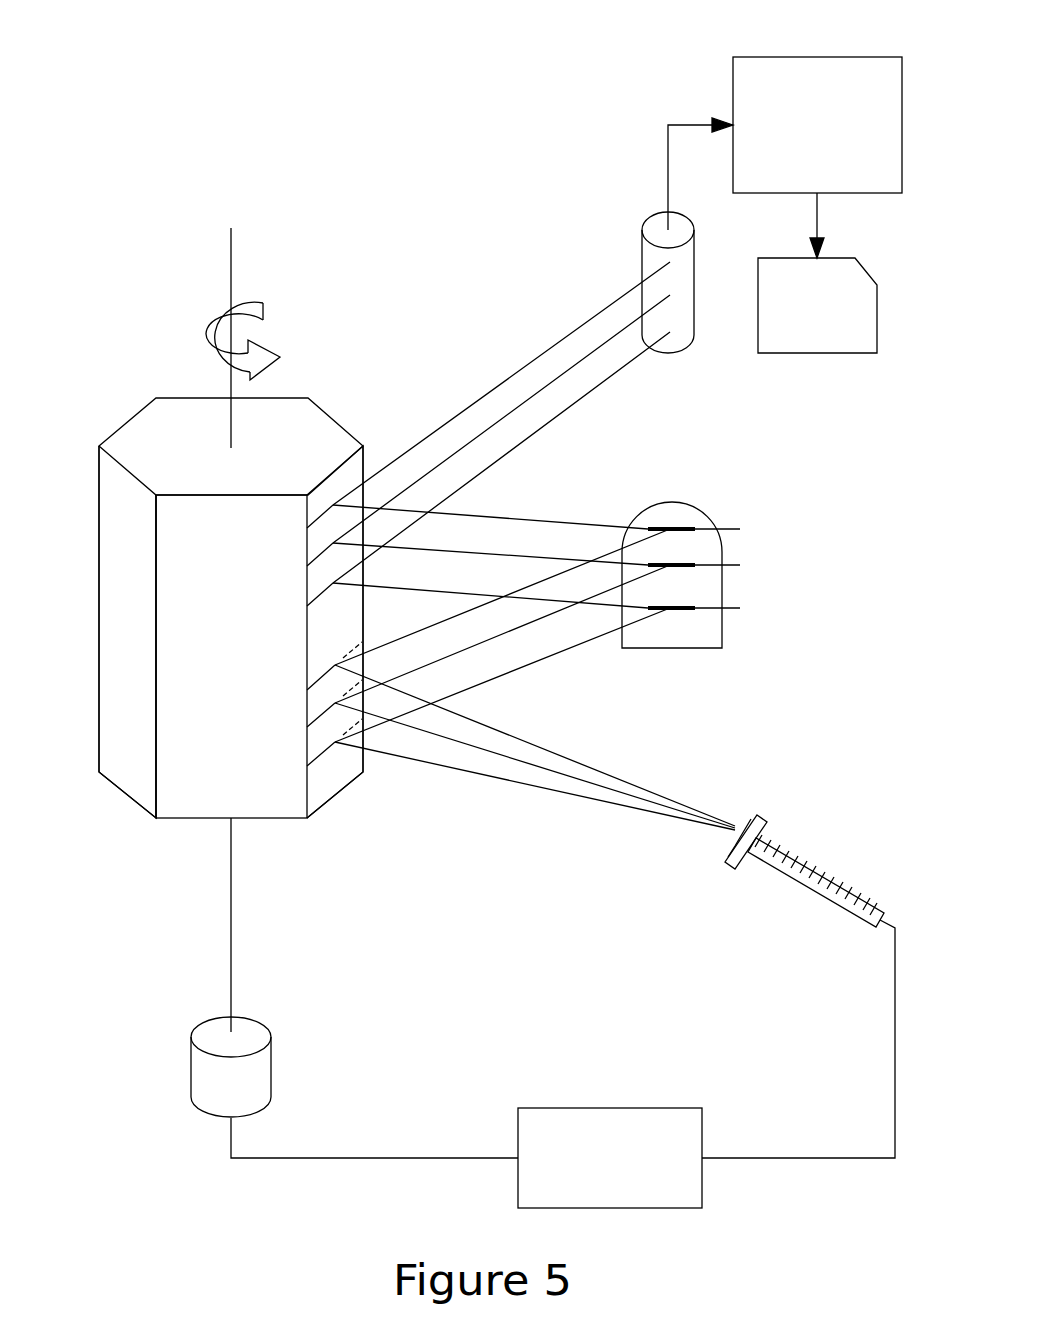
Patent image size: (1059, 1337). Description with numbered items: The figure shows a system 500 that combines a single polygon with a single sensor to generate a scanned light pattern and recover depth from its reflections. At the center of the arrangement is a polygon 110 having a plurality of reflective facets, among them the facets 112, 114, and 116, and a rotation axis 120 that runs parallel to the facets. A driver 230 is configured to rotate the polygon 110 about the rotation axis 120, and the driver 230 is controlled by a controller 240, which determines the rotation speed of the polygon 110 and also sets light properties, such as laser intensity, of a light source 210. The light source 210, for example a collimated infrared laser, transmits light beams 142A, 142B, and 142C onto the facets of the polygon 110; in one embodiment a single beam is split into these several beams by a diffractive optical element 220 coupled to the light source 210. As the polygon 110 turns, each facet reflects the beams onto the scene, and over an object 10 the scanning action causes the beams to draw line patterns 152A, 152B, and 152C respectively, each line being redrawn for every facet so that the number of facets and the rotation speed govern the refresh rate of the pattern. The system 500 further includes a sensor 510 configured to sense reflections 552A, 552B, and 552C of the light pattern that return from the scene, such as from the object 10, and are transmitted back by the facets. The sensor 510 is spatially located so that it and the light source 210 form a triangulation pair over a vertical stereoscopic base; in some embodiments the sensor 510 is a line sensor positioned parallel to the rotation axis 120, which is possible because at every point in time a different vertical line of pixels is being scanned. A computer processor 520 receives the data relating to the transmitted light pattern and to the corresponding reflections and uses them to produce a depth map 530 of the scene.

The object 10 is at (683, 528).
The polygon 110 is at (250, 619).
The reflective facet 112 is at (325, 775).
The reflective facet 114 is at (193, 805).
The reflective facet 116 is at (118, 545).
The rotation axis 120 is at (228, 262).
The light beam 142A is at (598, 777).
The light beam 142B is at (487, 755).
The light beam 142C is at (612, 808).
The line pattern 152A is at (727, 532).
The line pattern 152B is at (727, 567).
The line pattern 152C is at (727, 608).
The light source 210 is at (808, 868).
The diffractive optical element 220 is at (760, 818).
The driver 230 is at (192, 1068).
The controller 240 is at (605, 1108).
The system 500 is at (435, 992).
The sensor 510 is at (655, 225).
The computer processor 520 is at (820, 57).
The depth map 530 is at (795, 258).
The reflection 552A is at (590, 518).
The reflection 552B is at (510, 553).
The reflection 552C is at (410, 587).